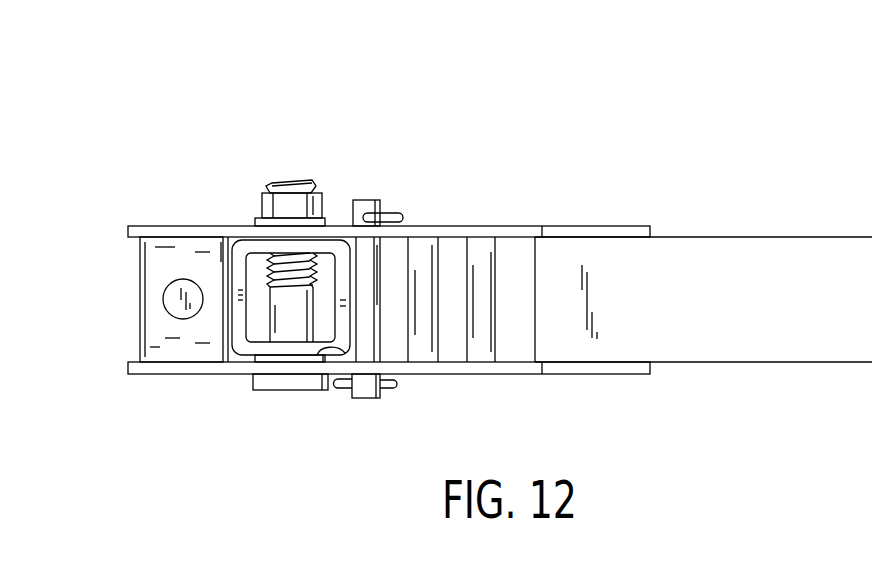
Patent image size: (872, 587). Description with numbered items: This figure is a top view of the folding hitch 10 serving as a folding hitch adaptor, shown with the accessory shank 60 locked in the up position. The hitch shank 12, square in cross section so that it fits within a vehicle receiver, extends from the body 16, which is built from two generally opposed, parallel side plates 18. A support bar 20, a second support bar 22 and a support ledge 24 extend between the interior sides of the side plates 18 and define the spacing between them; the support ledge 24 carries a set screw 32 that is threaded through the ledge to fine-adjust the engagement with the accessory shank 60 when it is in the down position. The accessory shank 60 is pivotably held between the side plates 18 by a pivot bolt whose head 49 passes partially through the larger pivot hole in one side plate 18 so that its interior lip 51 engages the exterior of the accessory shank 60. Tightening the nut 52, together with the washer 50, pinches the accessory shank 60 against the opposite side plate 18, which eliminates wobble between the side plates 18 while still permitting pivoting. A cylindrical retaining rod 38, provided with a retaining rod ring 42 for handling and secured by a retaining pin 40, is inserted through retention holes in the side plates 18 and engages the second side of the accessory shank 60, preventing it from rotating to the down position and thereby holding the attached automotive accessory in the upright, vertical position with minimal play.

The folding hitch 10 is at (679, 90).
The hitch shank 12 is at (352, 266).
The body 16 is at (534, 218).
The side plates 18 is at (205, 229).
The support bar 20 is at (422, 248).
The second support bar 22 is at (483, 253).
The support ledge 24 is at (160, 347).
The set screw 32 is at (175, 293).
The retaining rod 38 is at (380, 306).
The retaining pin 40 is at (392, 218).
The retaining rod ring 42 is at (345, 387).
The head 49 is at (252, 383).
The washer 50 is at (257, 218).
The interior lip 51 is at (323, 350).
The nut 52 is at (267, 202).
The accessory shank 60 is at (245, 347).